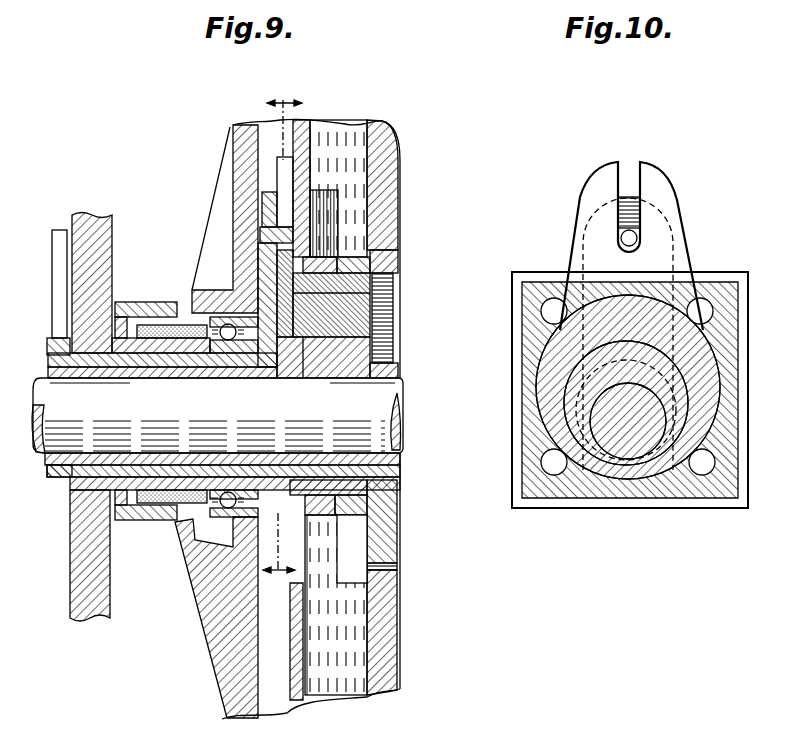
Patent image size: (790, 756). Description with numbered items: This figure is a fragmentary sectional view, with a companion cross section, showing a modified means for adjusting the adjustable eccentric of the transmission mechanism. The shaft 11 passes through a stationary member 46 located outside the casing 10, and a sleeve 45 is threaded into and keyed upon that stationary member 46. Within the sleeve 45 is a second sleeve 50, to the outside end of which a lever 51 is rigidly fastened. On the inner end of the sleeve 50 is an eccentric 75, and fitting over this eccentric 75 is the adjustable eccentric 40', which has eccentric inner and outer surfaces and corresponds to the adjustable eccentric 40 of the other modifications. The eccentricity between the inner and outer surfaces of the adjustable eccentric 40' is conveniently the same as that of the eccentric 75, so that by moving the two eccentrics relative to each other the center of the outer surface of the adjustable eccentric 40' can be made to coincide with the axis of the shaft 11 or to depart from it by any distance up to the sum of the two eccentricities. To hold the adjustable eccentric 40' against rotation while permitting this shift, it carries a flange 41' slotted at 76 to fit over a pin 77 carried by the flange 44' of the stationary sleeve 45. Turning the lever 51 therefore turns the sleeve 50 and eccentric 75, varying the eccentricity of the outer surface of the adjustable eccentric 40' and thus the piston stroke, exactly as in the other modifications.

In FIG. 9, the casing 10 is at (282, 342).
In FIG. 9, the shaft 11 is at (388, 393).
In FIG. 10, the shaft 11 is at (623, 448).
In FIG. 9, the adjustable eccentric 40 is at (416, 407).
In FIG. 9, the adjustable eccentric 40' is at (375, 305).
In FIG. 10, the adjustable eccentric 40' is at (595, 390).
In FIG. 9, the flange 41' is at (212, 421).
In FIG. 10, the flange 41' is at (651, 316).
In FIG. 9, the flange 44' is at (227, 305).
In FIG. 10, the flange 44' is at (632, 174).
In FIG. 9, the sleeve 45 is at (180, 338).
In FIG. 9, the stationary member 46 is at (100, 245).
In FIG. 9, the sleeve 50 is at (47, 372).
In FIG. 9, the lever 51 is at (57, 322).
In FIG. 9, the eccentric 75 is at (357, 351).
In FIG. 10, the eccentric 75 is at (571, 398).
In FIG. 9, the slot 76 is at (282, 168).
In FIG. 10, the slot 76 is at (635, 188).
In FIG. 9, the pin 77 is at (275, 223).
In FIG. 10, the pin 77 is at (633, 237).